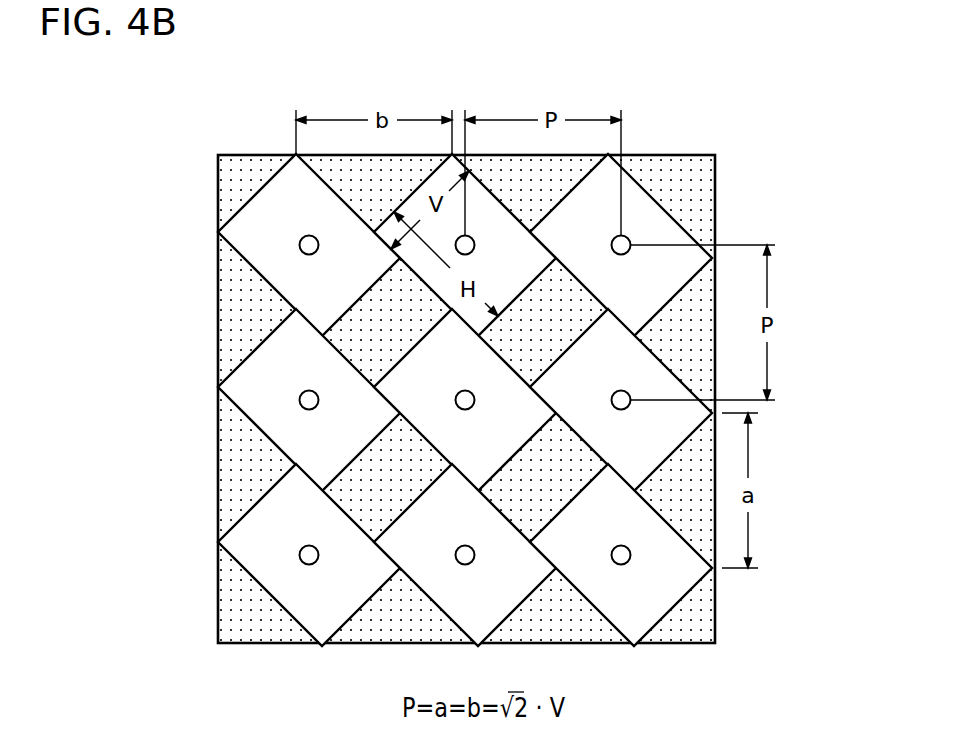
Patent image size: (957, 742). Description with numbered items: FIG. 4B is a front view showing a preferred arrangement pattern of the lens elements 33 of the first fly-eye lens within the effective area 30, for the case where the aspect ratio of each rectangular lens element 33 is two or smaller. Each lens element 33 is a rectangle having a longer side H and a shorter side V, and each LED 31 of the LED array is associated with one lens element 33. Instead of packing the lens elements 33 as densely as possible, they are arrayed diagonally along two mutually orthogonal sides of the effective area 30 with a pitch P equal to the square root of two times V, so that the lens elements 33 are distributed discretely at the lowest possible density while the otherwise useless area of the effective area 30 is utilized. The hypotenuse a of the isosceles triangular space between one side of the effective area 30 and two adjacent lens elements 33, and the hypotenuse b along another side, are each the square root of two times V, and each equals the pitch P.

The effective area 30 is at (233, 154).
The LED 31 is at (298, 398).
The lens element 33 is at (250, 367).